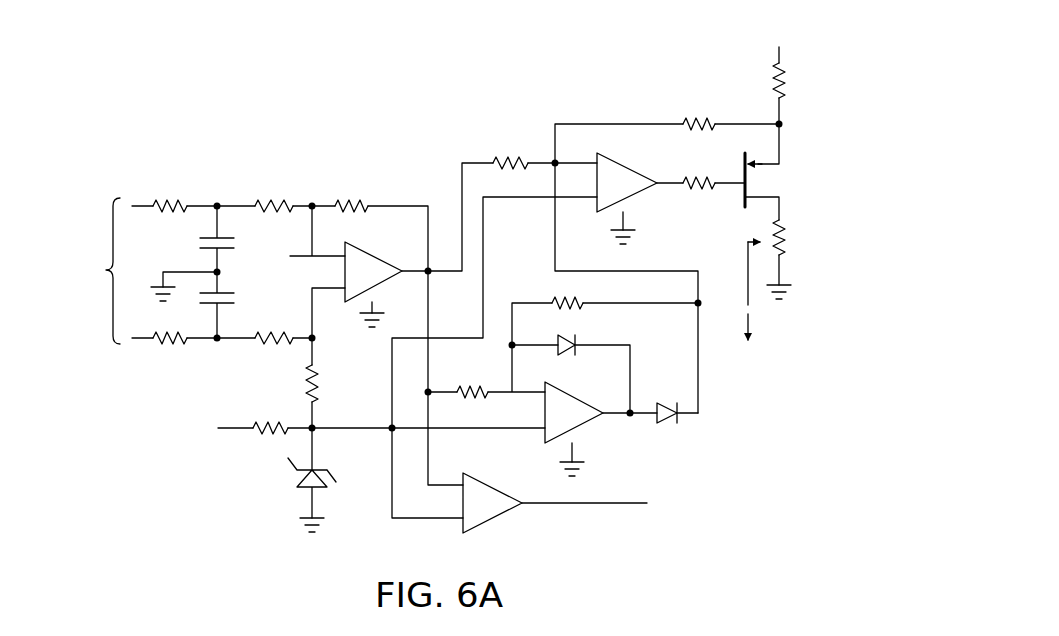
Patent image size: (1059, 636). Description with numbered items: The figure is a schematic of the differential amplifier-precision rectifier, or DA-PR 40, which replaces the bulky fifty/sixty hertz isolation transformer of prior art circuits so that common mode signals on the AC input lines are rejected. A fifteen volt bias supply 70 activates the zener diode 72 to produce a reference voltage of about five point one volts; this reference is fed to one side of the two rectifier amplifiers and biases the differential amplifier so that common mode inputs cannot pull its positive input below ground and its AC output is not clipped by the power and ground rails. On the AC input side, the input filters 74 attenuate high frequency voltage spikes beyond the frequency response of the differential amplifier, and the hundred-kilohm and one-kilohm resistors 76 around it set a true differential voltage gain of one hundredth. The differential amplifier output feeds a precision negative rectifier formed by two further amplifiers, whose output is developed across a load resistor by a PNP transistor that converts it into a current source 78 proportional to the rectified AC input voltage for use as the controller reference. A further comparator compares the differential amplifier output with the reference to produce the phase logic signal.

The DA-PR 40 is at (388, 112).
The +15 volt bias supply 70 is at (187, 447).
The zener diode 72 is at (302, 490).
The input filters 74 is at (216, 186).
The 100K and 1K resistors 76 is at (245, 171).
The current source 78 is at (746, 283).